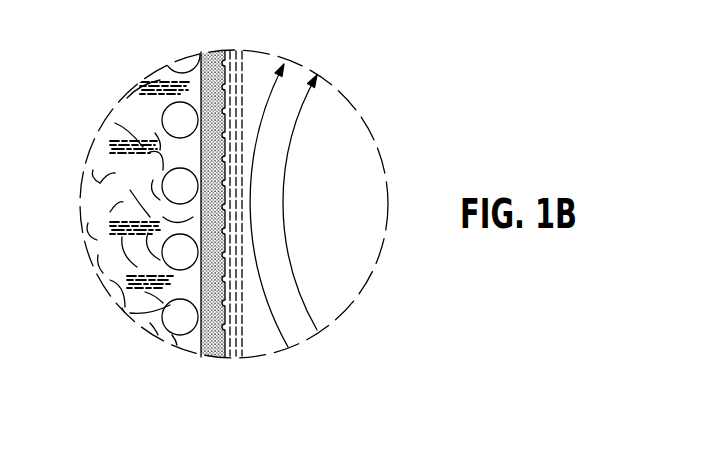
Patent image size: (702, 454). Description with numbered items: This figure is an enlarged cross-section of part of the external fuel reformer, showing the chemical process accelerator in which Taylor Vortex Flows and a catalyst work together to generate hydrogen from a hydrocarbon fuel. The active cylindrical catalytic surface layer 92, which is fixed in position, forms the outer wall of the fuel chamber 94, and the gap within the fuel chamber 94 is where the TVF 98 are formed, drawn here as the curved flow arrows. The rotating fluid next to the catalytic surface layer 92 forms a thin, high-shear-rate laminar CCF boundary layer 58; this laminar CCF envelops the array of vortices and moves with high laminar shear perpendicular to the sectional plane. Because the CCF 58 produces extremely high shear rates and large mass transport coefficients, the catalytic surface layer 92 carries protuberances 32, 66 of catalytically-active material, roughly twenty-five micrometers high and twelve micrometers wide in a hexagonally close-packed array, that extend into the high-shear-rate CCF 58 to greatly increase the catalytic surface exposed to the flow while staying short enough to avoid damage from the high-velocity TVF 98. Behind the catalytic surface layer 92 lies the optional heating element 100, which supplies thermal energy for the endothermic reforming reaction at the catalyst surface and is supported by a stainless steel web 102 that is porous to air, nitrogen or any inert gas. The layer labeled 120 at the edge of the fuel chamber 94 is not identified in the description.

The protuberances 32 is at (227, 255).
The protuberances 66 is at (335, 262).
The high-shear-rate laminar CCF boundary layer 58 is at (198, 194).
The catalytic surface layer 92 is at (226, 62).
The fuel chamber 94 is at (363, 224).
The TVF 98 is at (262, 128).
The heating element 100 is at (170, 118).
The stainless steel web 102 is at (103, 133).
The membrane layer 120 is at (243, 333).
The laminar CCF is at (233, 48).